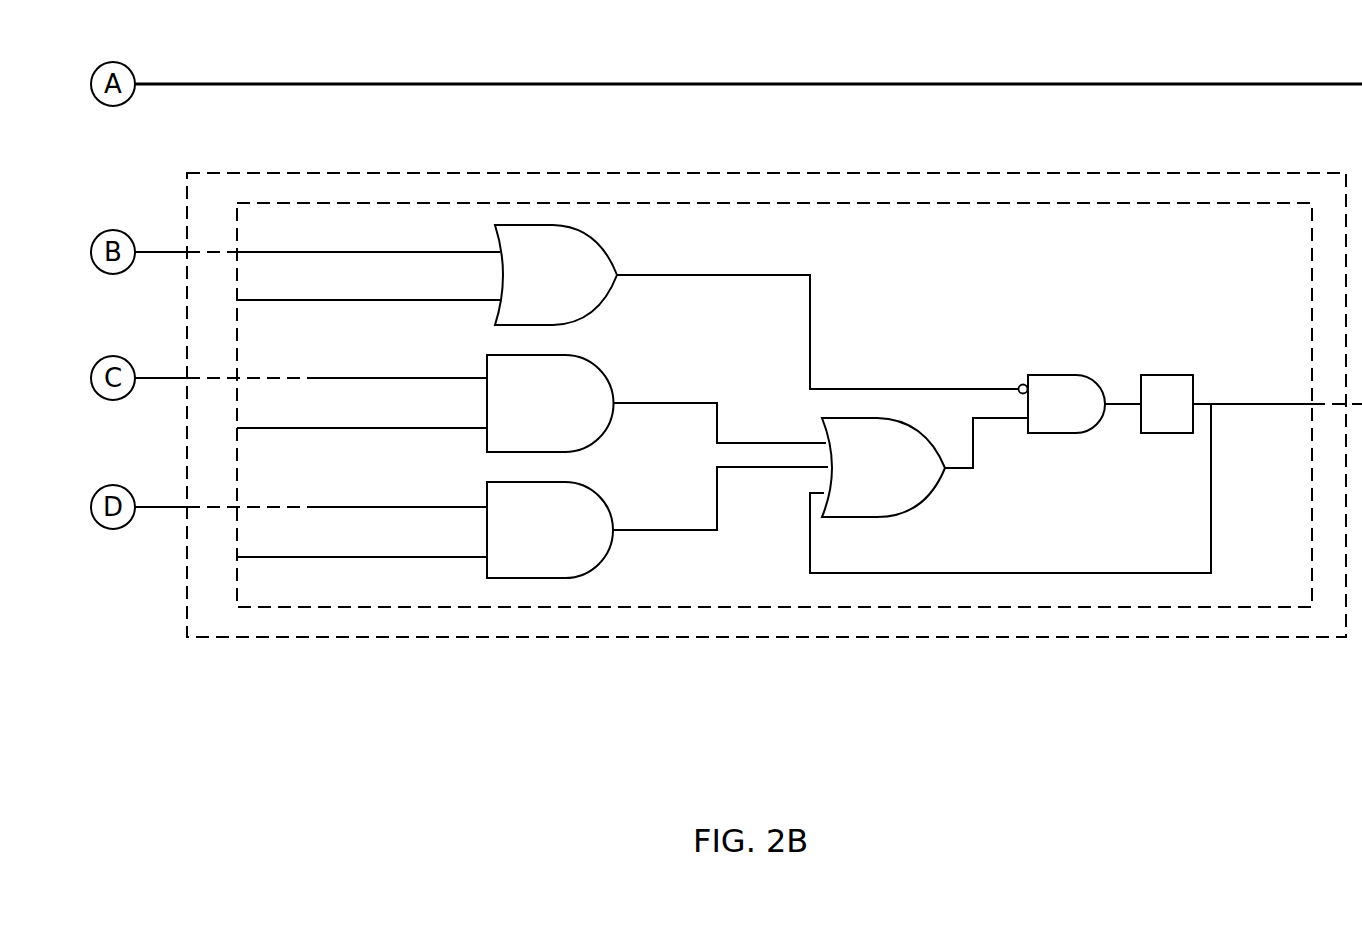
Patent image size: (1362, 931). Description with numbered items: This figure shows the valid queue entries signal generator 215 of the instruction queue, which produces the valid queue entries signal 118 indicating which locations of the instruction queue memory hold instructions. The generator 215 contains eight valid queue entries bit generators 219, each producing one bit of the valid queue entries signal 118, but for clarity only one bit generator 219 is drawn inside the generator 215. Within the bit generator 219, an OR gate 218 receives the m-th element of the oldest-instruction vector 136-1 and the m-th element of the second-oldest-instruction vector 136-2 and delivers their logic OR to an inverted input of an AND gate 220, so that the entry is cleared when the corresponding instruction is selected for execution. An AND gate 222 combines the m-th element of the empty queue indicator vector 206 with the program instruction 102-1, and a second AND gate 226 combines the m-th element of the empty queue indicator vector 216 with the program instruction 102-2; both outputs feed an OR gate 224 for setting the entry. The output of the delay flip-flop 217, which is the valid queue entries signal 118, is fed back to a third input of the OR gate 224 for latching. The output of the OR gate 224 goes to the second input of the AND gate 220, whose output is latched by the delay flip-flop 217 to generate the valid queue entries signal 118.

The valid queue entries signal 118 is at (727, 83).
The valid queue entries signal generator 215 is at (997, 173).
The valid queue entries bit generator 219 is at (997, 203).
The oldest-instruction vector 136-1 is at (260, 252).
The second-oldest-instruction vector 136-2 is at (260, 300).
The OR gate 218 is at (591, 244).
The AND gate 222 is at (592, 357).
The AND gate 226 is at (593, 485).
The OR gate 224 is at (912, 503).
The AND gate 220 is at (1048, 375).
The delay flip-flop 217 is at (1167, 375).
The empty queue indicator vector 206 is at (180, 383).
The empty queue indicator vector 216 is at (180, 510).
The program instruction 102-1 is at (258, 428).
The program instruction 102-2 is at (258, 557).